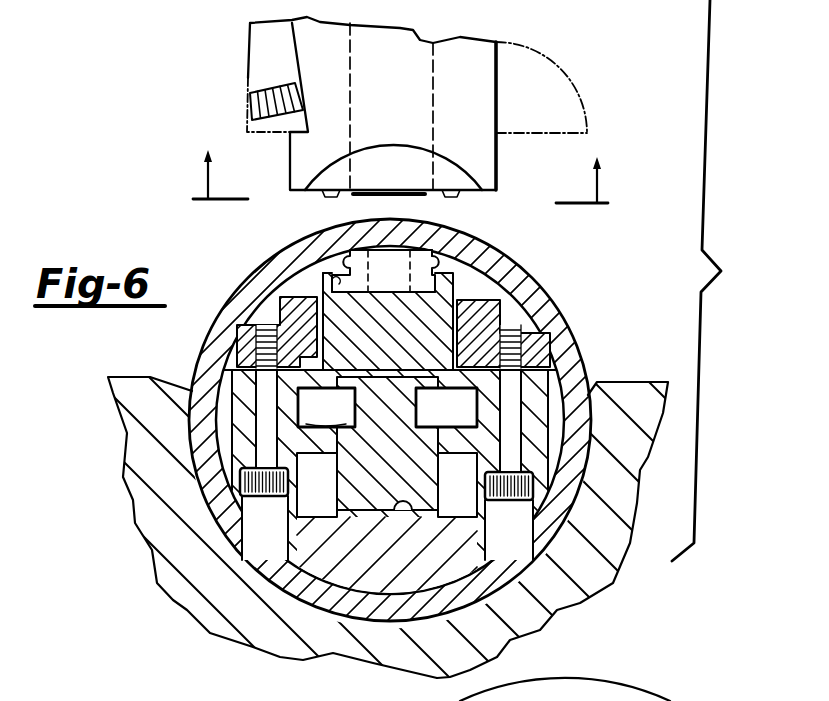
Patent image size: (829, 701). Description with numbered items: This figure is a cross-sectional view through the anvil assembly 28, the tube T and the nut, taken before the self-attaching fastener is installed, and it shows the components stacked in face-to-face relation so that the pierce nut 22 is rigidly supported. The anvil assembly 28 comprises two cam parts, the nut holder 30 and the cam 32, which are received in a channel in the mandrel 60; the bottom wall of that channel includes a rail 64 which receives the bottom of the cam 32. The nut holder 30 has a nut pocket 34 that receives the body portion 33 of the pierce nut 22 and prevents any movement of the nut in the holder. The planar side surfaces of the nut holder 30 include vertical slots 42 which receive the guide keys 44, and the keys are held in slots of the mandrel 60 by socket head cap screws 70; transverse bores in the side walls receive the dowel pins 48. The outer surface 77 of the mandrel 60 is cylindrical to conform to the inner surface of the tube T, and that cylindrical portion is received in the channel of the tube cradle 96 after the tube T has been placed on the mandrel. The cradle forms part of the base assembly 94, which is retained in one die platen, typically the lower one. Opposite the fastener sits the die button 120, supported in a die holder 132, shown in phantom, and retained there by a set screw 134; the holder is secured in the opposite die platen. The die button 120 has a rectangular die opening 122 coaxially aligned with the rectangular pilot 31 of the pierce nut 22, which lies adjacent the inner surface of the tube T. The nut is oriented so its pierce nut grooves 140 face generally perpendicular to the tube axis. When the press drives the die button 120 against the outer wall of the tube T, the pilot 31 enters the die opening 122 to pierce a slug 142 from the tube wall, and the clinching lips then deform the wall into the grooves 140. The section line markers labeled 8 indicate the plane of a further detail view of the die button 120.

The section line 8- 8 is at (402, 157).
The pierce nut 22 is at (401, 276).
The anvil assembly 28 is at (230, 353).
The nut holder 30 is at (404, 344).
The pilot 31 is at (437, 250).
The cam 32 is at (404, 456).
The body portion 33 is at (433, 288).
The nut pocket 34 is at (317, 278).
The vertical slots 42 is at (293, 310).
The guide keys 44 is at (272, 318).
The dowel pins 48 is at (326, 407).
The mandrel 60 is at (245, 412).
The rail 64 is at (416, 515).
The socket head cap screws 70 is at (547, 373).
The outer surface 77 is at (398, 600).
The base assembly 94 is at (650, 505).
The tube cradle 96 is at (168, 523).
The die button 120 is at (468, 102).
The die opening 122 is at (430, 120).
The die holder 132 is at (553, 118).
The set screw 134 is at (280, 88).
The pierce nut grooves 140 is at (350, 262).
The slug 142 is at (181, 692).
The tube T is at (543, 300).